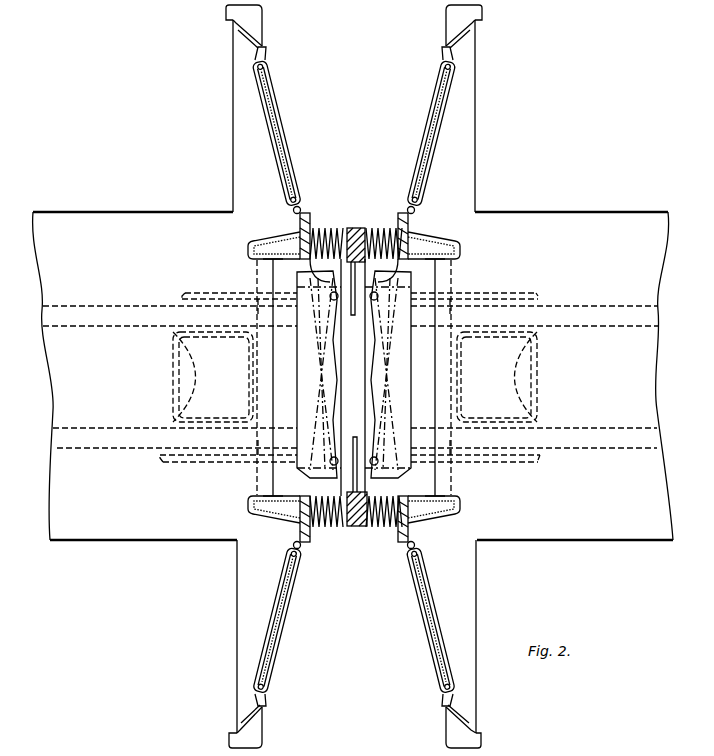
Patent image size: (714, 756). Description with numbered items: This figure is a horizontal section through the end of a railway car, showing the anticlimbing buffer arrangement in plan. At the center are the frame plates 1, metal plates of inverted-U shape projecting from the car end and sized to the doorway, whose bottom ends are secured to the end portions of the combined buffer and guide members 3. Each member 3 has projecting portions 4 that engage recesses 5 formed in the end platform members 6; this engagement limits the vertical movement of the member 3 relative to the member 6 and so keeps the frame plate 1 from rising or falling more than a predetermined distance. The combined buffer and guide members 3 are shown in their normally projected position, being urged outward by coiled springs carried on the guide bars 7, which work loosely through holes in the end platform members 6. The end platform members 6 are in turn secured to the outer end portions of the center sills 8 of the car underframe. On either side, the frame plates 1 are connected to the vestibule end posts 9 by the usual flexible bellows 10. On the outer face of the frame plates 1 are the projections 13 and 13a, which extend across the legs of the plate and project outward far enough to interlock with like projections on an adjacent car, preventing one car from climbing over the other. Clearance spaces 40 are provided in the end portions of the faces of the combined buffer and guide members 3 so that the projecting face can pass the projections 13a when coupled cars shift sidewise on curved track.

The frame plates 1 is at (348, 228).
The combined buffer and guide members 3 is at (362, 308).
The projecting portions 4 is at (340, 330).
The recesses 5 is at (262, 373).
The end platform members 6 is at (207, 355).
The guide bars 7 is at (207, 292).
The outer end portions of the center sills 8 is at (145, 313).
The vestibule end posts 9 is at (247, 248).
The flexible bellows 10 is at (321, 232).
The projections 13 is at (355, 228).
The projections 13a is at (352, 528).
The clearance spaces 40 is at (350, 273).